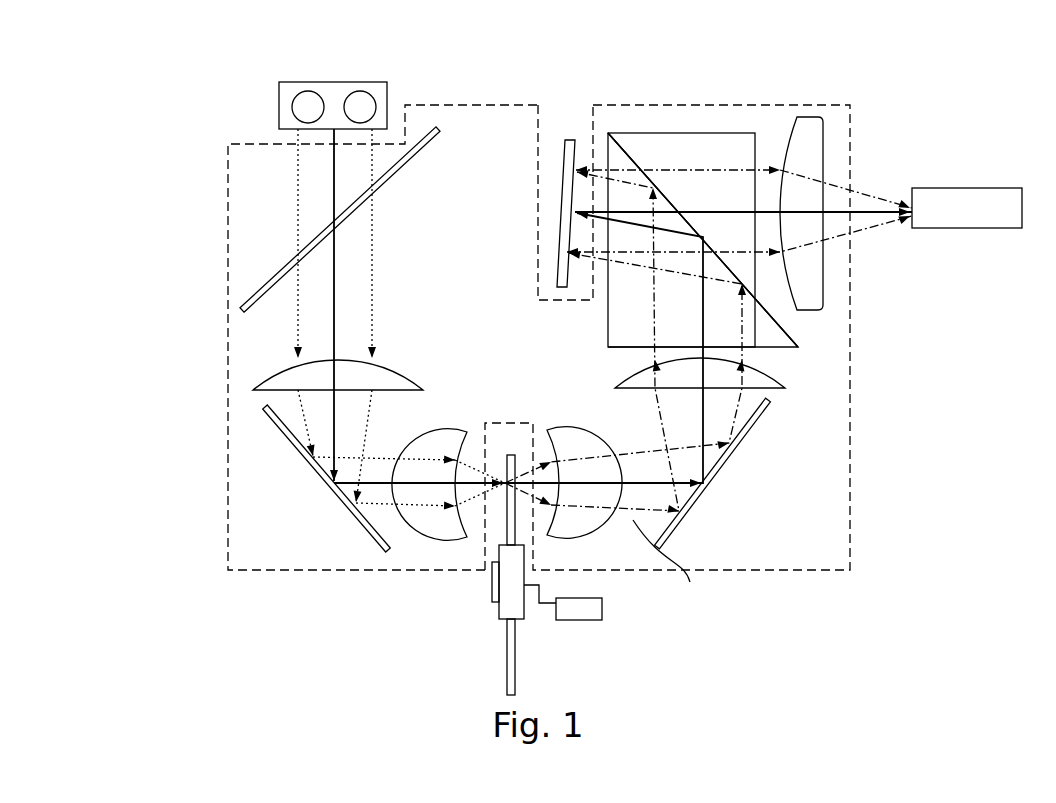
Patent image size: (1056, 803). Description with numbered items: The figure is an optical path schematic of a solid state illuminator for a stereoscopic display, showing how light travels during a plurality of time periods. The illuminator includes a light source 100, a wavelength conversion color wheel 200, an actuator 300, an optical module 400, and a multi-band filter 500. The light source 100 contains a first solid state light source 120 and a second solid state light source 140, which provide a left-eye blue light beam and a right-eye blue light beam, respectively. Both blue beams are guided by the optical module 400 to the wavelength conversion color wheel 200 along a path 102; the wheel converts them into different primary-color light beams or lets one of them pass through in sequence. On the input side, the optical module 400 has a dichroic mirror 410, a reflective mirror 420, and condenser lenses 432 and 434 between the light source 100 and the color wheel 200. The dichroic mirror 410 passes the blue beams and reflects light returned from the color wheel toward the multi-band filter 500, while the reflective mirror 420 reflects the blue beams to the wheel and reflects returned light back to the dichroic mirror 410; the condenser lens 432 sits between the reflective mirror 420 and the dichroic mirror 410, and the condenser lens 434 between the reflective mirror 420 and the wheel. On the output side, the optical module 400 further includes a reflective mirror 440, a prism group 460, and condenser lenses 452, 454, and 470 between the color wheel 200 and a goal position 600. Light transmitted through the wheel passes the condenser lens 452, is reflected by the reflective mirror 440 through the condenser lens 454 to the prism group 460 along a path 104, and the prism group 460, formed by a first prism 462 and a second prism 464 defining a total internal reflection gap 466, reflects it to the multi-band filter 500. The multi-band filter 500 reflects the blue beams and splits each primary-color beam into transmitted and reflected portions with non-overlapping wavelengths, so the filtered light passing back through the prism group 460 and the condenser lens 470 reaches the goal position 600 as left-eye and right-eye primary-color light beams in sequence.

The light source 100 is at (320, 77).
The first solid state light source 120 is at (307, 91).
The second solid state light source 140 is at (360, 91).
The path 102 is at (290, 181).
The dichroic mirror 410 is at (242, 312).
The condenser lens 432 is at (253, 376).
The reflective mirror 420 is at (308, 462).
The condenser lens 434 is at (442, 537).
The wavelength conversion color wheel 200 is at (516, 665).
The actuator 300 is at (602, 606).
The condenser lens 452 is at (568, 535).
The path 104 is at (669, 560).
The reflective mirror 440 is at (724, 467).
The condenser lens 454 is at (762, 360).
The prism group 460 is at (777, 244).
The first prism 462 is at (795, 342).
The second prism 464 is at (768, 312).
The total internal reflection gap 466 is at (631, 146).
The condenser lens 470 is at (823, 281).
The multi-band filter 500 is at (570, 140).
The goal position 600 is at (962, 188).
The optical module 400 is at (851, 441).